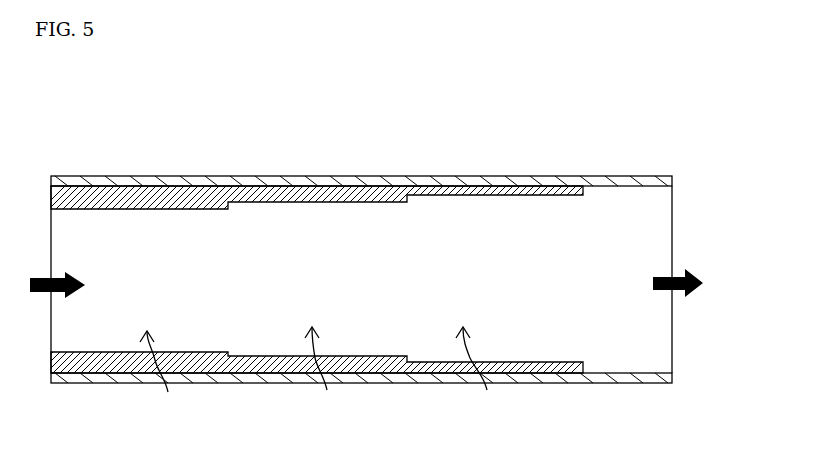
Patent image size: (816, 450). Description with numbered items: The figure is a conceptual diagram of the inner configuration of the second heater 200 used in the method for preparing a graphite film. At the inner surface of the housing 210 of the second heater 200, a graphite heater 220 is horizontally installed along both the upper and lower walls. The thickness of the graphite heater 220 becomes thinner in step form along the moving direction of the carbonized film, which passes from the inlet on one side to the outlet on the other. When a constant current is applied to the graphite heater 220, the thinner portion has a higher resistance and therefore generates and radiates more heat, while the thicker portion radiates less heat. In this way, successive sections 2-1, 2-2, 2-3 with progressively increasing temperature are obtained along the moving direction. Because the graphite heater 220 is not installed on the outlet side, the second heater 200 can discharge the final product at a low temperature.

The second heater 200 is at (399, 103).
The housing 210 is at (501, 176).
The graphite heater 220 is at (572, 194).
The section 2-1 is at (164, 377).
The section 2-2 is at (321, 375).
The section 2-3 is at (477, 375).